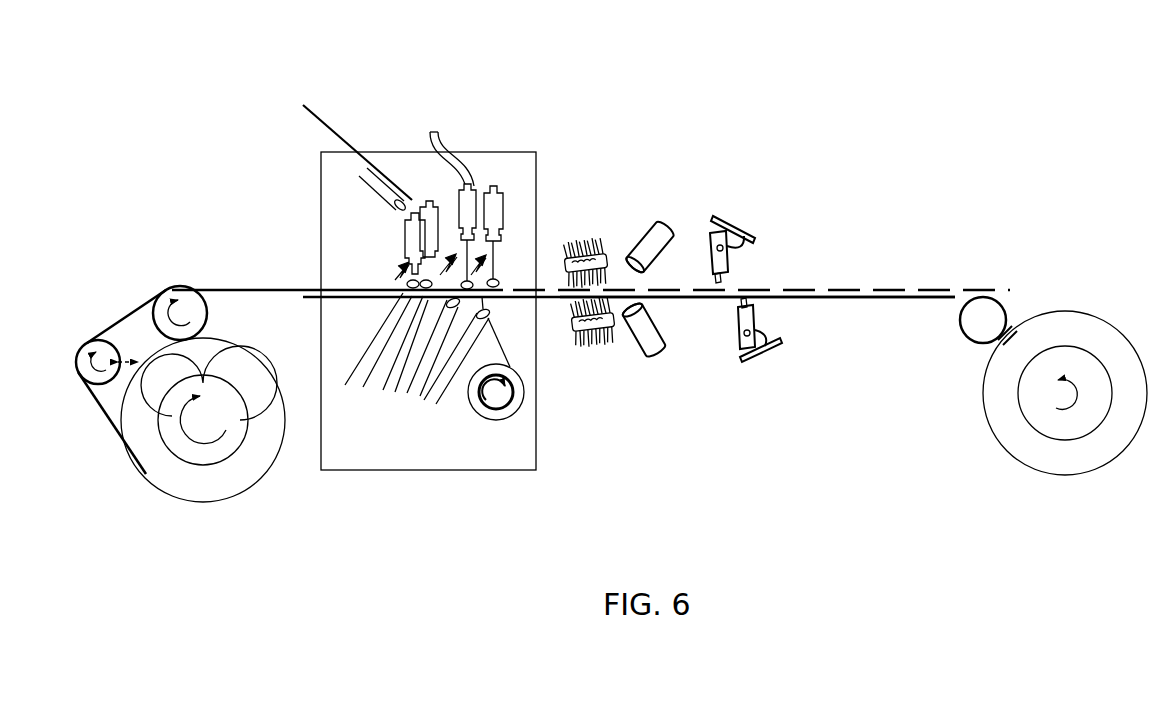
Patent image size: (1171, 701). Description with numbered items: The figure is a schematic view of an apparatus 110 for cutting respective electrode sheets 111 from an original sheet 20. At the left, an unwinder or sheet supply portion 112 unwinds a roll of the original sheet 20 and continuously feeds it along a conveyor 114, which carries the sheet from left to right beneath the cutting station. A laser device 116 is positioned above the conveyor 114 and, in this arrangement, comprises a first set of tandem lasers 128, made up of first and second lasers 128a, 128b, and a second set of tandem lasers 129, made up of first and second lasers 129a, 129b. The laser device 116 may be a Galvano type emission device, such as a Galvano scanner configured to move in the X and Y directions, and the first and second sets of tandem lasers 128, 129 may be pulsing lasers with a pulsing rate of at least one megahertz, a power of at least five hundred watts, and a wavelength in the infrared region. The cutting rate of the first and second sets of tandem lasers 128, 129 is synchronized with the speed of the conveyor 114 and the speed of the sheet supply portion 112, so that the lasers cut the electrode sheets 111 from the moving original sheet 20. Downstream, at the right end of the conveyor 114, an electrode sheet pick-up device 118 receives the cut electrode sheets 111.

The apparatus 110 is at (218, 103).
The original sheet 20 is at (252, 288).
The sheet supply portion 112 is at (252, 482).
The second set of tandem lasers 129 is at (390, 218).
The first laser 129a is at (412, 242).
The second laser 129b is at (423, 207).
The laser device 116 is at (417, 183).
The first set of tandem lasers 128 is at (488, 172).
The first laser 128a is at (472, 190).
The second laser 128b is at (500, 208).
The electrode sheets 111 is at (802, 288).
The conveyor 114 is at (695, 298).
The electrode sheet pick-up device 118 is at (987, 442).